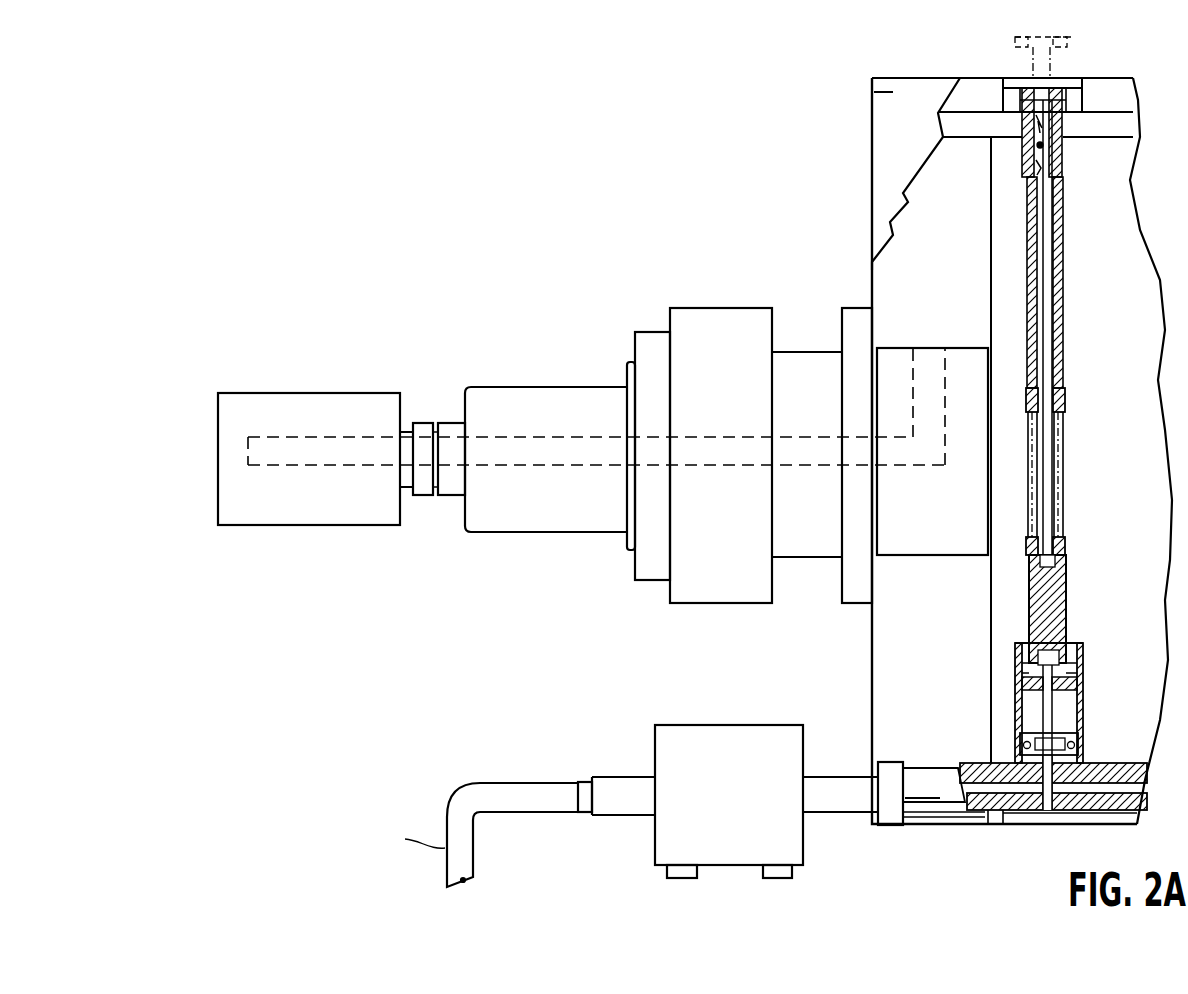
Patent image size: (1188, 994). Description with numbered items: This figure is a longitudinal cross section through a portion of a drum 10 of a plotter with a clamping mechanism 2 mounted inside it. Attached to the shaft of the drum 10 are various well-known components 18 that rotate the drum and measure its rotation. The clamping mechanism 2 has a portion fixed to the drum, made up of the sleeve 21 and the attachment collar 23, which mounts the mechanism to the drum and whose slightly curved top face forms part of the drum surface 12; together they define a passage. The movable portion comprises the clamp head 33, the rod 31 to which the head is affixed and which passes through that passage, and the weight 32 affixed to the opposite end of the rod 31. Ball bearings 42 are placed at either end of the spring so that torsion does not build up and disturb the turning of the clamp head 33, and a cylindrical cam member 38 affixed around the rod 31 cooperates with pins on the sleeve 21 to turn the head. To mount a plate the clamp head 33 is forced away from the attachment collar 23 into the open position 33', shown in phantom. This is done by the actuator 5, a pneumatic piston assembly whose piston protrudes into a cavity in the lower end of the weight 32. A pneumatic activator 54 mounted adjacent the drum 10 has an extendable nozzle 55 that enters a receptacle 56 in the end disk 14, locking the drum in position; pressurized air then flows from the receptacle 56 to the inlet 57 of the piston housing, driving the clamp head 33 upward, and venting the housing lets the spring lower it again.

The clamping mechanism 2 is at (1010, 62).
The actuator 5 is at (1001, 703).
The drum 10 is at (808, 104).
The drum surface 12 is at (903, 80).
The end disk 14 is at (870, 185).
The components 18 is at (253, 360).
The sleeve 21 is at (1063, 322).
The attachment collar 23 is at (1070, 101).
The rod 31 is at (1045, 268).
The weight 32 is at (1068, 600).
The clamp head 33 is at (1092, 78).
The open position of clamp head 33' is at (1076, 46).
The cylindrical cam member 38 is at (1058, 143).
The ball bearings 42 is at (1066, 402).
The pneumatic activator 54 is at (735, 725).
The extendable nozzle 55 is at (850, 776).
The receptacle 56 is at (878, 815).
The inlet 57 is at (1001, 800).